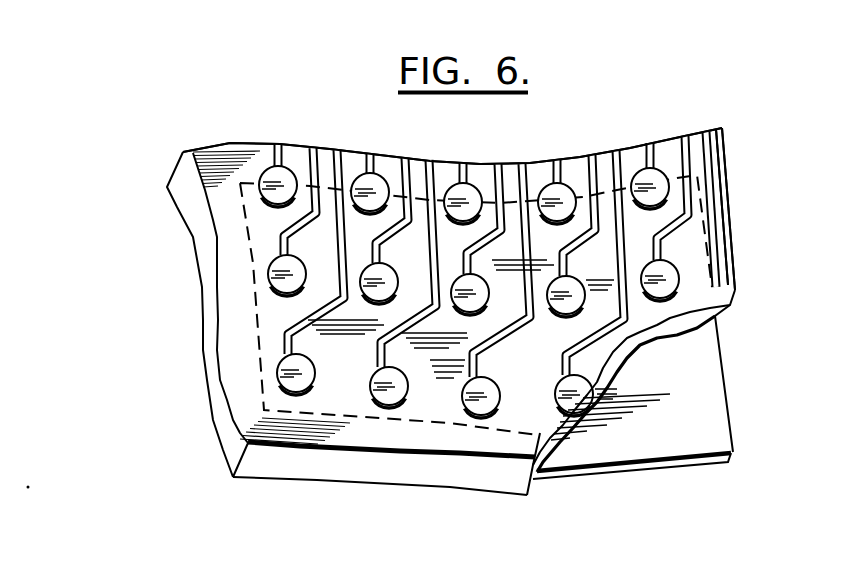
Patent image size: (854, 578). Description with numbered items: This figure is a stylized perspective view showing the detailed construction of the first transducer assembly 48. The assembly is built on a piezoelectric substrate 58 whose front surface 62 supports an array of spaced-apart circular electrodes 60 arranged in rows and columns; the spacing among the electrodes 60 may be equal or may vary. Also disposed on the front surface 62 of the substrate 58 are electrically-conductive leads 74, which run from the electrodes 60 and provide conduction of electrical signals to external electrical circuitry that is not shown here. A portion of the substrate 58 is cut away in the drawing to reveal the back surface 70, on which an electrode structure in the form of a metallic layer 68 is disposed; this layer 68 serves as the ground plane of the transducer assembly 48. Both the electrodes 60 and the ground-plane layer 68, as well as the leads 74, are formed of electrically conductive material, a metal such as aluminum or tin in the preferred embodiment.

The first transducer assembly 48 is at (146, 185).
The substrate 58 is at (495, 482).
The electrodes 60 is at (268, 277).
The front surface 62 is at (233, 228).
The metallic layer 68 is at (642, 478).
The back surface 70 is at (722, 315).
The electrically-conductive leads 74 is at (258, 325).